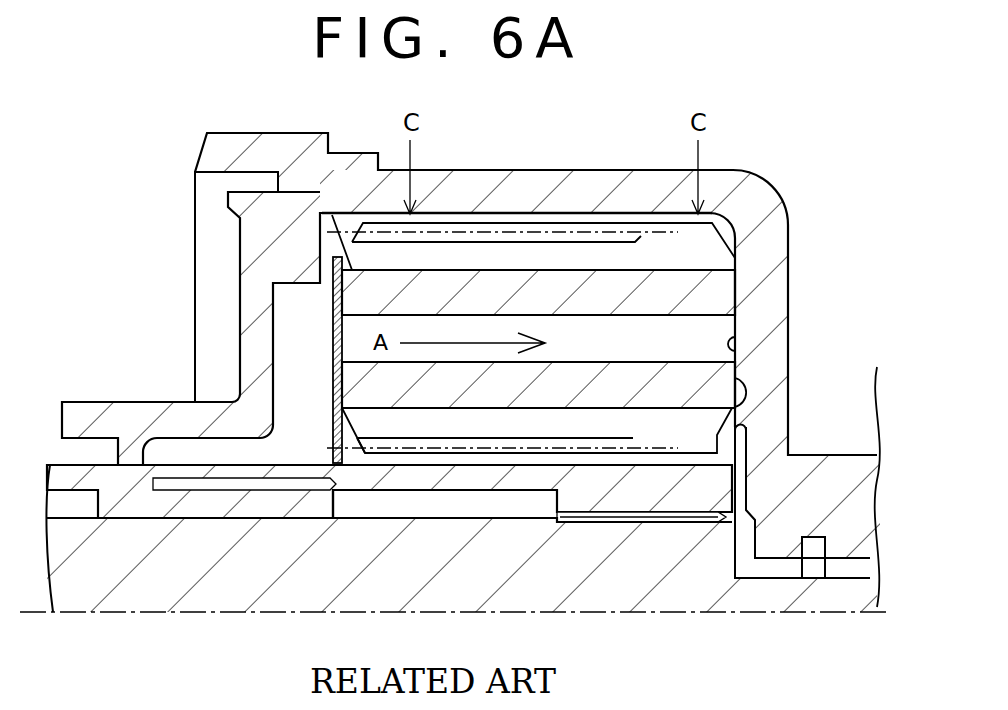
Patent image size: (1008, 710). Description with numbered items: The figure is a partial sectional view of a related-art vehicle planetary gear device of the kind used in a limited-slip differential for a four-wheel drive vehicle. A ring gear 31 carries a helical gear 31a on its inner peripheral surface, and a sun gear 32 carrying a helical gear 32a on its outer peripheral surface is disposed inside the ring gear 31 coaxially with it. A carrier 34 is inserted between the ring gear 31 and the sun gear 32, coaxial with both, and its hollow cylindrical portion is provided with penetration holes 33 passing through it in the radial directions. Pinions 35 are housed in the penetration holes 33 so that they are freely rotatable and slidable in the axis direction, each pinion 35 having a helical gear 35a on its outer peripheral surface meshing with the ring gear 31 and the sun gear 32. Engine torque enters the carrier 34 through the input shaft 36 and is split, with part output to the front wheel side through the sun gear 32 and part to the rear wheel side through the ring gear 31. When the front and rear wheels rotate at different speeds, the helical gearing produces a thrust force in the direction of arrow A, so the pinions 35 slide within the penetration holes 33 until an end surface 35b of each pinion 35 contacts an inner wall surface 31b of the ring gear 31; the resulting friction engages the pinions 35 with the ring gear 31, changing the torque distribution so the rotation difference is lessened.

The ring gear 31 is at (790, 270).
The helical gear 31a is at (530, 218).
The inner wall surface 31b is at (738, 353).
The sun gear 32 is at (389, 497).
The helical gear 32a is at (340, 452).
The penetration holes 33 is at (742, 428).
The carrier 34 is at (655, 492).
The pinions 35 is at (546, 297).
The helical gear 35a is at (735, 238).
The end surface 35b is at (727, 415).
The input shaft 36 is at (83, 595).